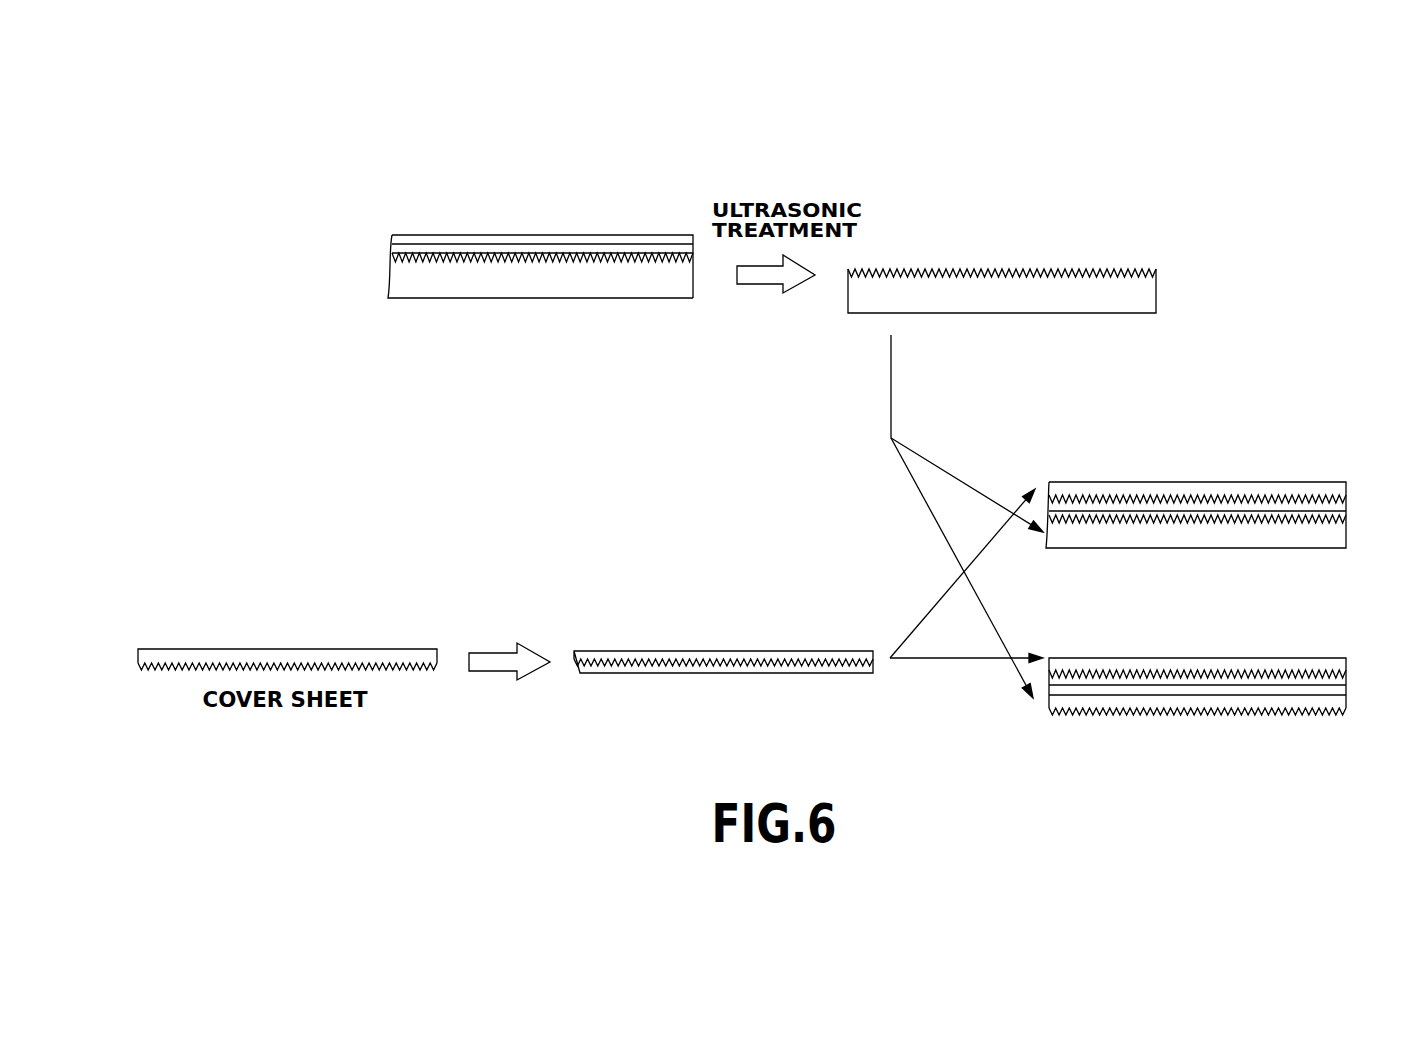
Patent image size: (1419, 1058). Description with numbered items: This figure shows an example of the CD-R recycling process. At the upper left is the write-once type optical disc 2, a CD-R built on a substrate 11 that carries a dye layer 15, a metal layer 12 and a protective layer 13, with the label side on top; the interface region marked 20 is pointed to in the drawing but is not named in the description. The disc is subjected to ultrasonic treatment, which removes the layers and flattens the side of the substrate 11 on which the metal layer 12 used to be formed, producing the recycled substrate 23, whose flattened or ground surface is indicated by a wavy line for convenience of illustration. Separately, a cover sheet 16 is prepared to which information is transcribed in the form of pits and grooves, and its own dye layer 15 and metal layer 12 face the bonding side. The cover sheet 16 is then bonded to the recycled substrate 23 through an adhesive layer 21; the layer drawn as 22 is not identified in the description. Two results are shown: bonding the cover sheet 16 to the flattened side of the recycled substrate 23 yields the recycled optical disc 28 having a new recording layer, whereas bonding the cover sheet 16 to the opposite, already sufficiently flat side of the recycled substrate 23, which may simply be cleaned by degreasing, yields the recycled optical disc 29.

The write-once type optical disc 2 is at (620, 222).
The substrate 11 is at (602, 285).
The metal layer 12 is at (523, 245).
The protective layer 13 is at (456, 237).
The dye layer 15 is at (398, 253).
The cover sheet 16 is at (210, 653).
The interface between substrate and recording layer 20 is at (517, 275).
The adhesive layer 21 is at (1346, 515).
The protective layer 22 is at (1343, 507).
The recycled substrate 23 is at (993, 307).
The recycled optical disc 28 is at (1340, 452).
The recycled optical disc 29 is at (1340, 640).